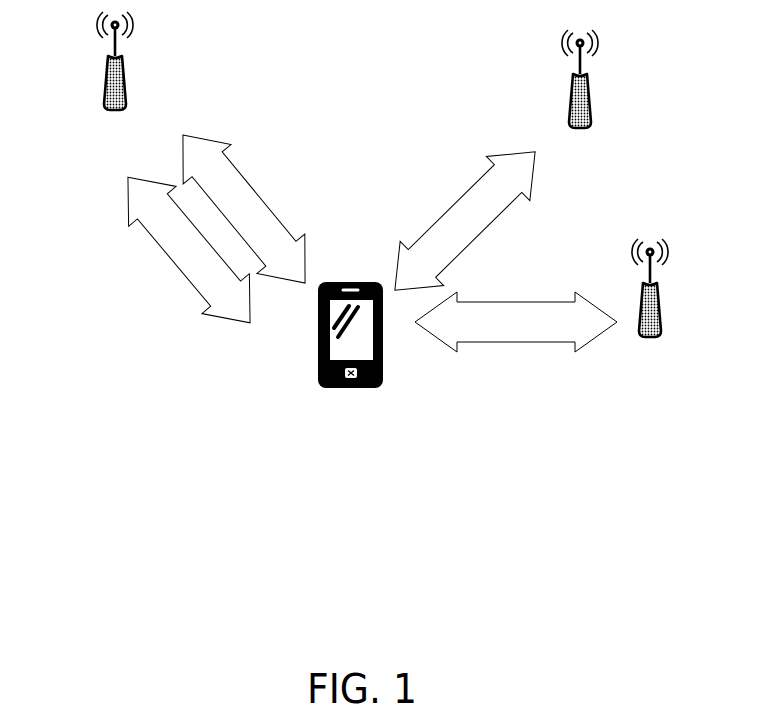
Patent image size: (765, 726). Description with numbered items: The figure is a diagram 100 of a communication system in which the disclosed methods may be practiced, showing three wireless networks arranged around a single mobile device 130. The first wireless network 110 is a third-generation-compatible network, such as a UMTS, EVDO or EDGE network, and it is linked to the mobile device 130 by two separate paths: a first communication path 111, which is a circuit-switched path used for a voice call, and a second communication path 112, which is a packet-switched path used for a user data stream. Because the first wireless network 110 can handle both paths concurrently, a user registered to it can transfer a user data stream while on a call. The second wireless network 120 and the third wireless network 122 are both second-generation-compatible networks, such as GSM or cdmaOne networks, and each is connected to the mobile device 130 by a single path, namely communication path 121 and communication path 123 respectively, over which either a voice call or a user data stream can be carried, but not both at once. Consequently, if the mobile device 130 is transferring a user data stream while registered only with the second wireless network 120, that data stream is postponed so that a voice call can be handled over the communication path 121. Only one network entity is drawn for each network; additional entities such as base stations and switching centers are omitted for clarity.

The diagram of a communication system 100 is at (358, 325).
The first wireless network 110 is at (115, 80).
The first communication path 111 is at (243, 177).
The second communication path 112 is at (180, 268).
The second wireless network 120 is at (580, 98).
The communication path 121 is at (472, 190).
The third wireless network 122 is at (650, 307).
The communication path 123 is at (510, 343).
The mobile device 130 is at (412, 420).